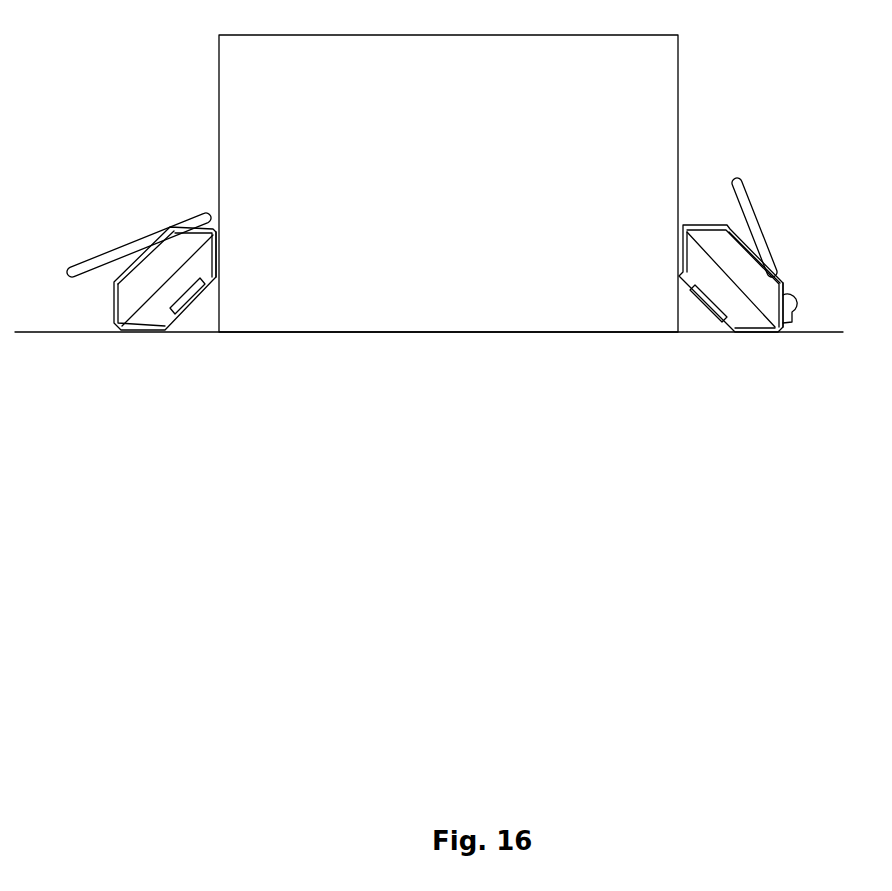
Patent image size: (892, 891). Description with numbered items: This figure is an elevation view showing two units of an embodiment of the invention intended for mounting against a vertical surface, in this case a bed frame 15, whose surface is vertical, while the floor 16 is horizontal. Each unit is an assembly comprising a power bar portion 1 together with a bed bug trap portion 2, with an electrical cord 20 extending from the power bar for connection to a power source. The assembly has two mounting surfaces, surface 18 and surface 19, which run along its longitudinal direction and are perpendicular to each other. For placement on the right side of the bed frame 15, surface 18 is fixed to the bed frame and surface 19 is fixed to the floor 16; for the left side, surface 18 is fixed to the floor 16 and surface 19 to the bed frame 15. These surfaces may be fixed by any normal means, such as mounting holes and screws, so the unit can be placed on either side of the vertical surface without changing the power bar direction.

The power bar portion 1 is at (762, 287).
The bed bug trap portion 2 is at (725, 320).
The bed frame 15 is at (219, 91).
The floor 16 is at (50, 333).
The mounting surface 18 is at (145, 333).
The mounting surface 19 is at (216, 259).
The electrical cord 20 is at (80, 267).